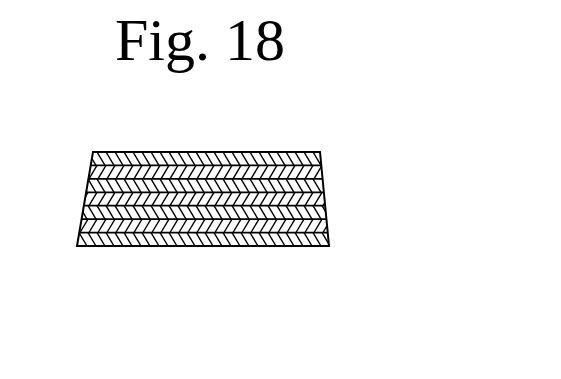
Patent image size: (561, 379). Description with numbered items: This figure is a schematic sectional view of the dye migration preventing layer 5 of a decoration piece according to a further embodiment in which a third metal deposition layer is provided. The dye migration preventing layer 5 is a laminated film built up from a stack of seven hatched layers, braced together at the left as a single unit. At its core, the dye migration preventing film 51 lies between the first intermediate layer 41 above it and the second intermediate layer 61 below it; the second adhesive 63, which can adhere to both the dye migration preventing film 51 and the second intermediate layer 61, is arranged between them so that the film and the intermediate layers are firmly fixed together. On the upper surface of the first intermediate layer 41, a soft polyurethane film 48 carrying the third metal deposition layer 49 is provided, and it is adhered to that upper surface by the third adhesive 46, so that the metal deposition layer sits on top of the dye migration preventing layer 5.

The dye migration preventing layer 5 is at (65, 152).
The soft polyurethane film 48 is at (290, 156).
The third metal deposition layer 49 is at (323, 170).
The third adhesive 46 is at (323, 187).
The first intermediate layer 41 is at (323, 203).
The dye migration preventing film 51 is at (327, 212).
The second adhesive 63 is at (327, 225).
The second intermediate layer 61 is at (307, 237).